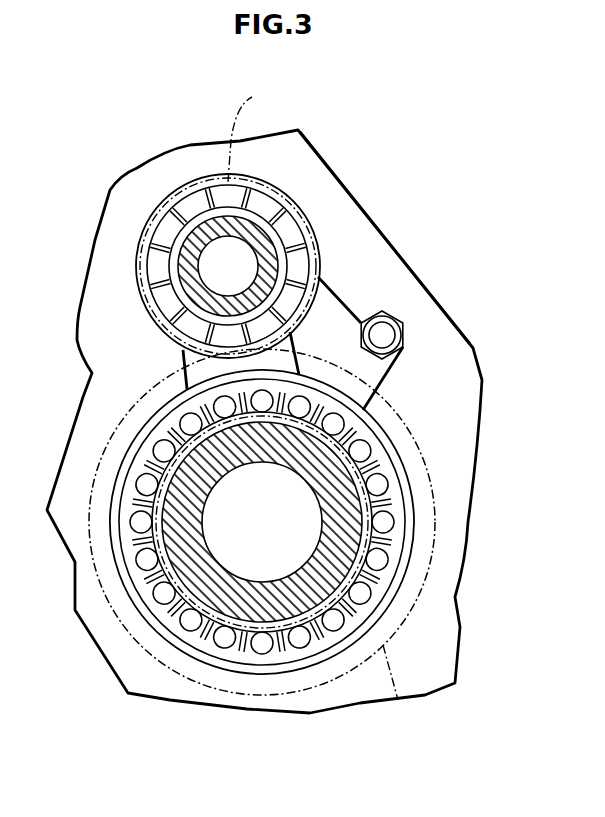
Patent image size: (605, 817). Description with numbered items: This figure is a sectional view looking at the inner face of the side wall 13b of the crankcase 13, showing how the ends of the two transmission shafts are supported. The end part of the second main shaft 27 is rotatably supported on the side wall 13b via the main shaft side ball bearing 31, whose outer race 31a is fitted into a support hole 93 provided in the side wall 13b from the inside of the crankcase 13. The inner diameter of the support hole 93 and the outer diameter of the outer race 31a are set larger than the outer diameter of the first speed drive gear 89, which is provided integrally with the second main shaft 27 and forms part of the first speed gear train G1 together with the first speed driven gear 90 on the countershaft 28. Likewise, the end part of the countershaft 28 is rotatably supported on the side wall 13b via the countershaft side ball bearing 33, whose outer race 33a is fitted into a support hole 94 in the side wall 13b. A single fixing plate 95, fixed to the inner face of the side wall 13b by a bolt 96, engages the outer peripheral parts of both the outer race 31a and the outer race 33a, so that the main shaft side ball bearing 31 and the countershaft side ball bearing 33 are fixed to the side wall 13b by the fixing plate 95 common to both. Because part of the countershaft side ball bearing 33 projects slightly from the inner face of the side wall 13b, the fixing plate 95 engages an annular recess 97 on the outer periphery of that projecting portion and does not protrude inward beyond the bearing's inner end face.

The crankcase 13 is at (348, 186).
The side wall 13b is at (355, 234).
The second main shaft 27 is at (278, 253).
The countershaft 28 is at (353, 523).
The main shaft side ball bearing 31 is at (198, 197).
The outer race 31a is at (140, 247).
The countershaft side ball bearing 33 is at (193, 630).
The outer race 33a is at (262, 663).
The first speed drive gear 89 is at (255, 136).
The first speed driven gear 90 is at (398, 700).
The support hole 93 is at (150, 302).
The support hole 94 is at (120, 547).
The fixing plate 95 is at (345, 307).
The bolt 96 is at (410, 327).
The annular recess 97 is at (130, 458).
The first speed gear train G1 is at (183, 364).